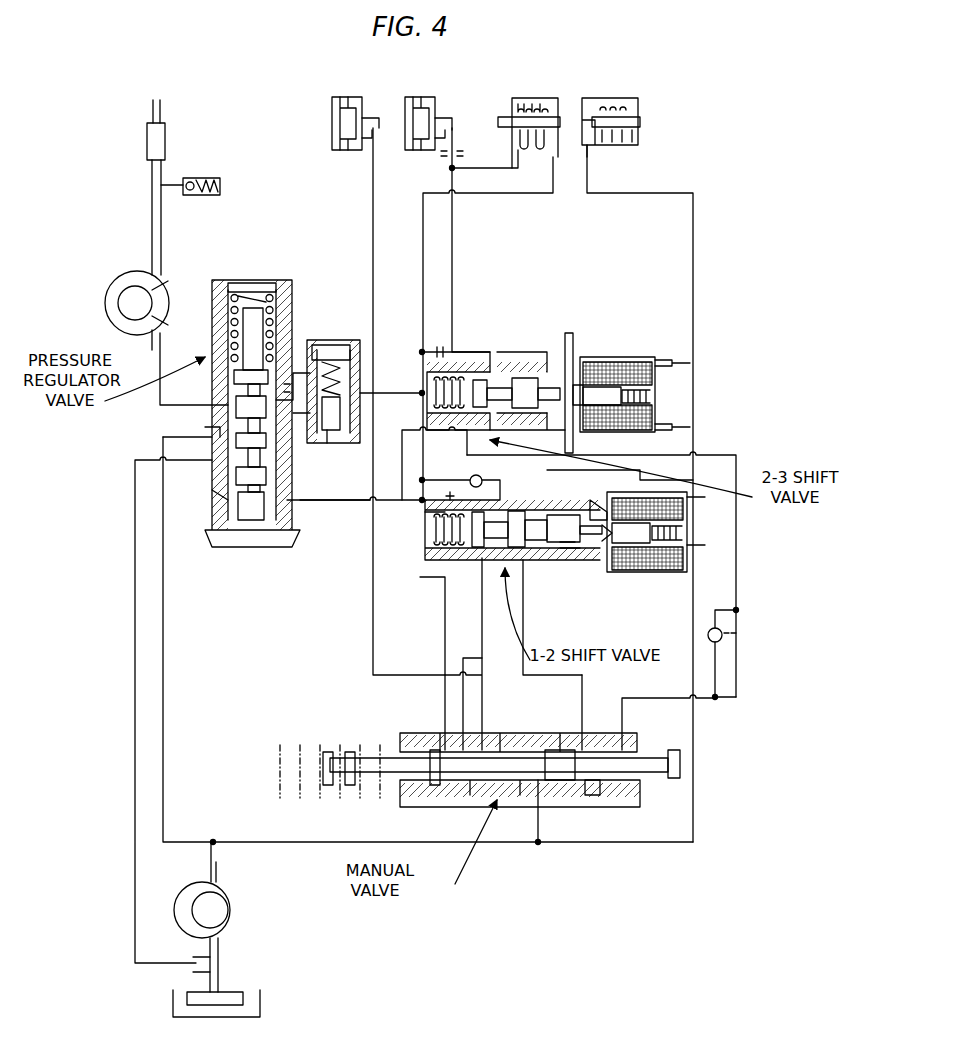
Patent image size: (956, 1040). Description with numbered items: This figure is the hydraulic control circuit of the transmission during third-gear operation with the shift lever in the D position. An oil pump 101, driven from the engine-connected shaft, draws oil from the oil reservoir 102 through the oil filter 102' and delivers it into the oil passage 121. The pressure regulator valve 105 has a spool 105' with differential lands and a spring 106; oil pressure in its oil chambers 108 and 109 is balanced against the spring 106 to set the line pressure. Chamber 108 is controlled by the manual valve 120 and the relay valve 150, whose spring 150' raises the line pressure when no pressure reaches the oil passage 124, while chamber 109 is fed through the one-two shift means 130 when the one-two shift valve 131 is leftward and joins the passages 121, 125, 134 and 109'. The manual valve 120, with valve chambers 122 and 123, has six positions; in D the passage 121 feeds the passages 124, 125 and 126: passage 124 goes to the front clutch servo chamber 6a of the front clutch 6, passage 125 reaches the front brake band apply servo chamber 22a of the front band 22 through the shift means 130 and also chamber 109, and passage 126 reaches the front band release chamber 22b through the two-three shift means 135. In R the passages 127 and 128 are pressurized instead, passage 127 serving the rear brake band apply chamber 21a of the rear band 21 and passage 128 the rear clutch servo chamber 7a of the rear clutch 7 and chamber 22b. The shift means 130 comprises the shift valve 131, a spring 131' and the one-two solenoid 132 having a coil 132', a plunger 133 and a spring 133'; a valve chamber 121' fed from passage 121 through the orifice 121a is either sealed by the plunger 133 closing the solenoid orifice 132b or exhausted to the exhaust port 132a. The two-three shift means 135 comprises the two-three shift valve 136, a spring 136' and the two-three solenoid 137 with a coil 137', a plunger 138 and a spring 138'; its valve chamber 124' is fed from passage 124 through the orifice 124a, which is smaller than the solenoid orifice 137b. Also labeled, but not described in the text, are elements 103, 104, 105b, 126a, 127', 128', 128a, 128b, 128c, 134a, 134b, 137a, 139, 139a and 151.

The pressure switch 6 is at (342, 97).
The front clutch servo chamber 6a is at (356, 104).
The pressure switch 7 is at (417, 97).
The rear clutch servo chamber 7a is at (435, 104).
The clutch 21 is at (632, 103).
The rear brake band apply side servo chamber 21a is at (595, 117).
The clutch 22 is at (507, 106).
The front brake band apply side servo chamber 22a is at (552, 110).
The front brake band release side servo chamber 22b is at (535, 102).
The oil pump 101 is at (225, 900).
The oil reservoir 102 is at (241, 1003).
The oil filter 102' is at (229, 972).
The relief valve 103 is at (205, 197).
The oil cooler 104 is at (166, 140).
The pressure regulator valve 105 is at (252, 389).
The spool 105' is at (219, 414).
The regulator valve port 105b is at (212, 433).
The spring 106 is at (232, 313).
The oil chamber 108 is at (228, 390).
The oil chamber 109 is at (297, 497).
The oil passage 109' is at (335, 517).
The manual valve 120 is at (393, 785).
The oil passage 121 is at (414, 700).
The valve chamber 121' is at (552, 562).
The orifice 121a is at (525, 616).
The valve chamber 122 is at (490, 785).
The valve chamber 123 is at (592, 796).
The oil passage 124 is at (422, 439).
The valve chamber 124' is at (597, 364).
The orifice 124a is at (410, 350).
The oil passage 125 is at (465, 690).
The oil passage 126 is at (444, 636).
The branch passage 126a is at (372, 582).
The oil passage 127 is at (552, 712).
The passage 127' is at (640, 493).
The oil passage 128 is at (668, 710).
The branch passage 128' is at (434, 463).
The passage 128a is at (740, 650).
The passage 128b is at (738, 460).
The check valve 128c is at (708, 633).
The 1-2 shift means 130 is at (690, 550).
The 1-2 shift valve 131 is at (559, 534).
The spring 131' is at (434, 548).
The 1-2 solenoid 132 is at (662, 554).
The coil 132' is at (645, 578).
The exhaust port 132a is at (600, 505).
The solenoid orifice 132b is at (585, 545).
The plunger 133 is at (663, 563).
The spring 133' is at (667, 524).
The oil passage 134 is at (422, 256).
The passage 134a is at (448, 515).
The orifice 134b is at (470, 478).
The 2-3 shift means 135 is at (665, 418).
The 2-3 shift valve 136 is at (493, 377).
The spring 136' is at (462, 360).
The 2-3 solenoid 137 is at (634, 352).
The coil 137' is at (622, 364).
The plunger rod 137a is at (565, 370).
The solenoid orifice 137b is at (560, 435).
The plunger 138 is at (678, 391).
The spring 138' is at (660, 382).
The passage 139 is at (453, 252).
The check valve 139a is at (451, 168).
The relay valve 150 is at (333, 404).
The spring 150' is at (328, 347).
The throttle pressure passage 151 is at (380, 392).